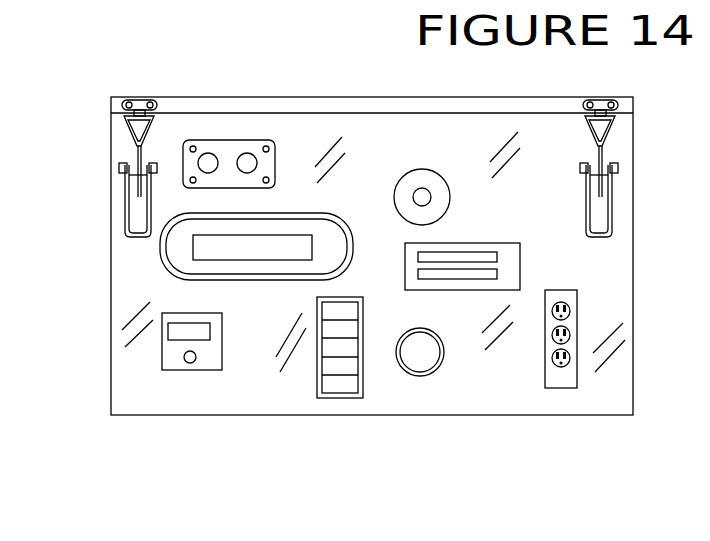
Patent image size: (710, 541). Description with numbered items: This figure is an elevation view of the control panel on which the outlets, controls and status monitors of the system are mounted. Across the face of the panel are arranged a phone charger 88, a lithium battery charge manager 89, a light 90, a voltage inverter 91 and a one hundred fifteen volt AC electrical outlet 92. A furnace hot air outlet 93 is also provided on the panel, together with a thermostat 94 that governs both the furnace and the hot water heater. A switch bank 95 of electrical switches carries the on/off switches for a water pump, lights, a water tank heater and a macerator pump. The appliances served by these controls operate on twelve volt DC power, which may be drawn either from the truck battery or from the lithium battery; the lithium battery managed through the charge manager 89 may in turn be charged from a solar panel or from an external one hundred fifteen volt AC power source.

The phone charger 88 is at (228, 148).
The lithium battery charge manager 89 is at (175, 248).
The light 90 is at (422, 172).
The voltage inverter 91 is at (517, 273).
The 115 VAC electrical outlet 92 is at (558, 381).
The furnace hot air outlet 93 is at (415, 362).
The thermostat 94 is at (173, 360).
The switch bank 95 is at (319, 382).